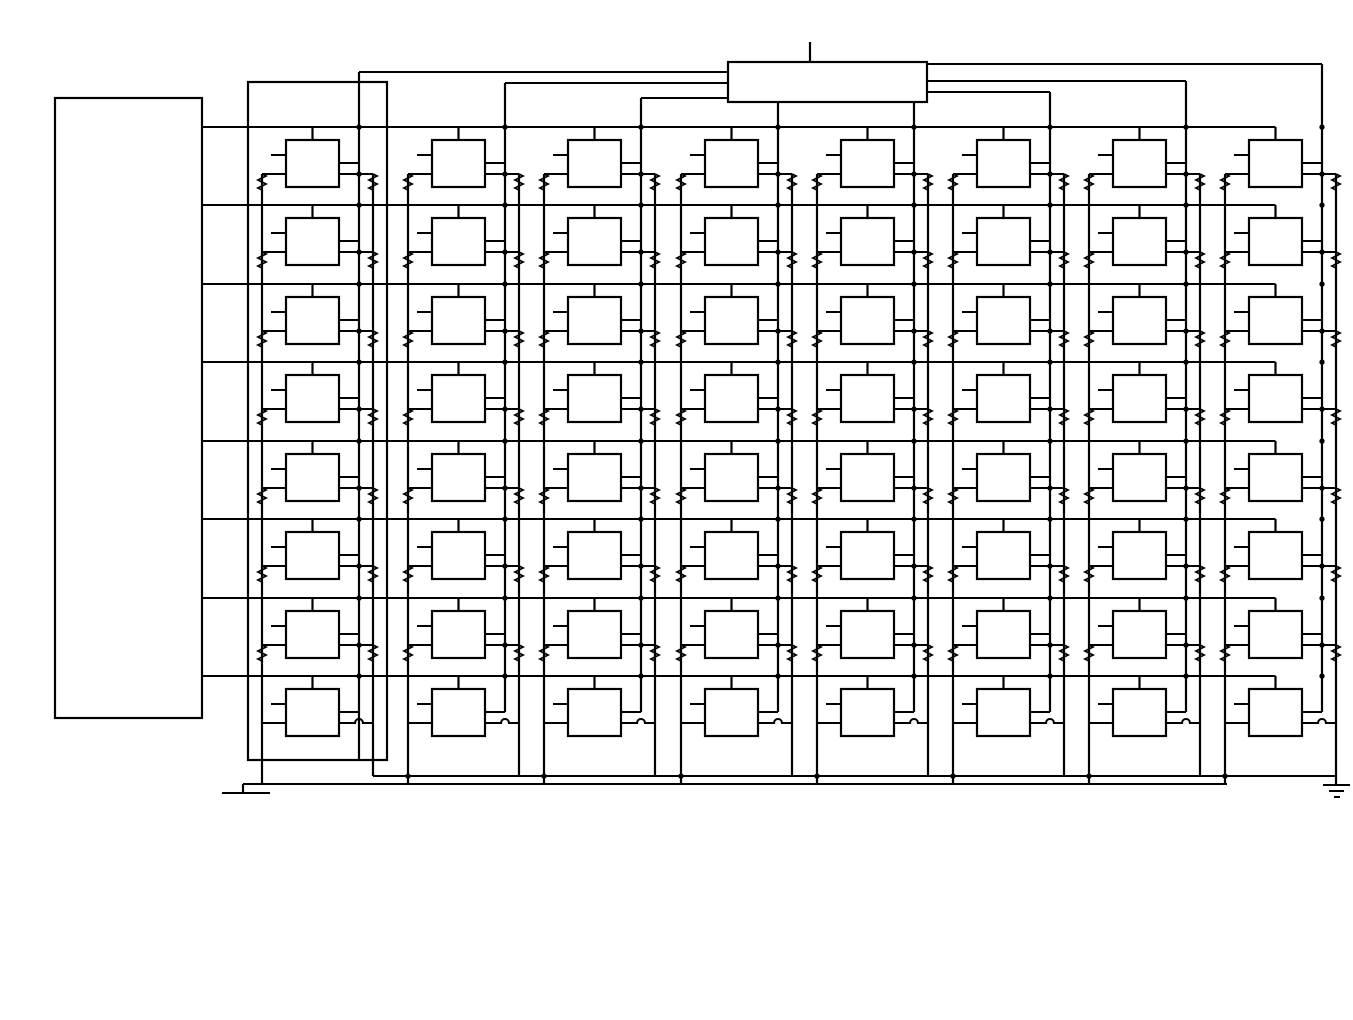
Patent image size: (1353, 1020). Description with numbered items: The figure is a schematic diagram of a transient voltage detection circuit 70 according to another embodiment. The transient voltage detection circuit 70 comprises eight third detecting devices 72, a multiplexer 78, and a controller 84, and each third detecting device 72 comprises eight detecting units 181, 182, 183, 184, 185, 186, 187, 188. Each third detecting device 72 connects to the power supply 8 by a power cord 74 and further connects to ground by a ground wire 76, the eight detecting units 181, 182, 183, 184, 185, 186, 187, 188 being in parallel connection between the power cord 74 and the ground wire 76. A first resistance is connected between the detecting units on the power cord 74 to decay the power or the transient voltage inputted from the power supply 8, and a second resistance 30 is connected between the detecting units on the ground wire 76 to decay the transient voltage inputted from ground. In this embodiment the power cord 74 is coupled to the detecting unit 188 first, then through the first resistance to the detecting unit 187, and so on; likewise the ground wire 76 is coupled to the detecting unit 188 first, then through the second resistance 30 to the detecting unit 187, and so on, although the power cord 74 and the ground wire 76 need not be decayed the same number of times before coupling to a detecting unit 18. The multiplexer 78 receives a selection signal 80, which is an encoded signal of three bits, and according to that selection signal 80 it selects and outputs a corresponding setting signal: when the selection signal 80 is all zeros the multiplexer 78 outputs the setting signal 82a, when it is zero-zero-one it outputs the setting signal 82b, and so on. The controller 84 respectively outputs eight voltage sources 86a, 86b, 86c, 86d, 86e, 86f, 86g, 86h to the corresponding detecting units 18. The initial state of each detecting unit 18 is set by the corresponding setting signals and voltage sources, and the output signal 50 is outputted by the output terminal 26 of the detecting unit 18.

The transient voltage detection circuit 70 is at (1211, 52).
The third detecting device 72 is at (270, 81).
The power cord 74 is at (456, 777).
The ground wire 76 is at (578, 777).
The multiplexer 78 is at (827, 83).
The selection signal 80 is at (808, 59).
The setting signal 82a is at (455, 72).
The setting signal 82b is at (600, 83).
The controller 84 is at (128, 408).
The voltage source 86a is at (226, 125).
The voltage source 86b is at (226, 203).
The voltage source 86c is at (226, 282).
The voltage source 86d is at (226, 360).
The voltage source 86e is at (226, 439).
The voltage source 86f is at (226, 517).
The voltage source 86g is at (226, 596).
The voltage source 86h is at (226, 674).
The output signal 50 is at (278, 157).
The output terminal 26 is at (282, 152).
The second resistance 30 is at (523, 185).
The detecting unit 18 is at (720, 737).
The detecting unit 181 is at (317, 158).
The detecting unit 182 is at (317, 236).
The detecting unit 183 is at (317, 315).
The detecting unit 184 is at (317, 393).
The detecting unit 185 is at (317, 472).
The detecting unit 186 is at (317, 550).
The detecting unit 187 is at (317, 629).
The detecting unit 188 is at (317, 706).
The power supply 8 is at (289, 819).